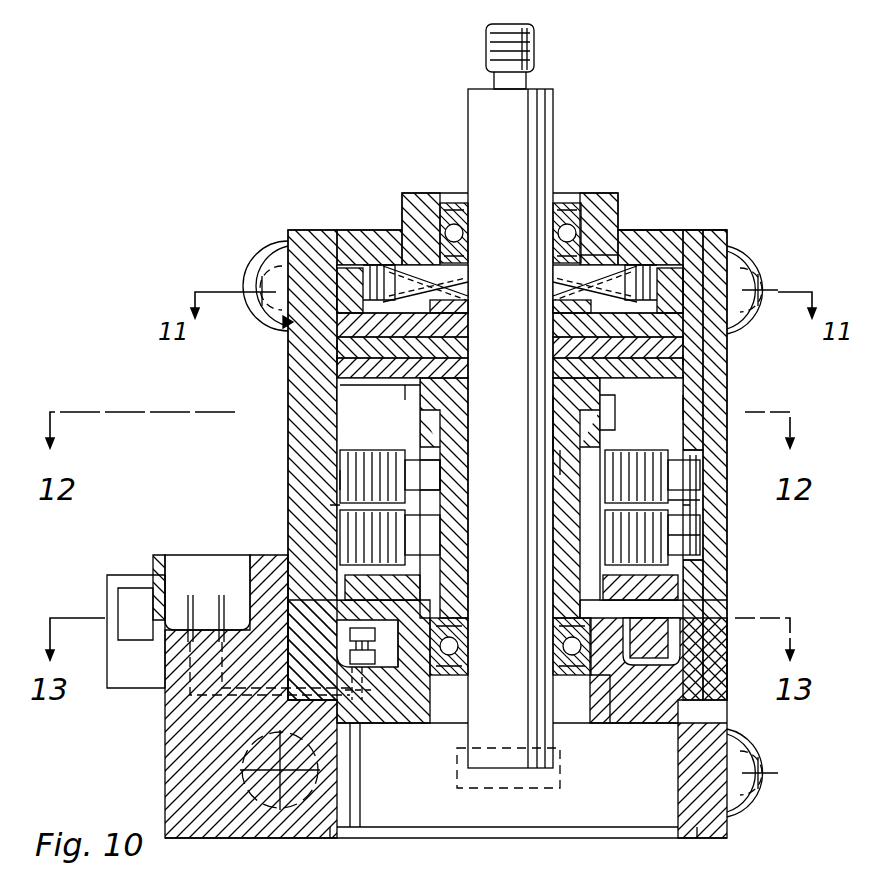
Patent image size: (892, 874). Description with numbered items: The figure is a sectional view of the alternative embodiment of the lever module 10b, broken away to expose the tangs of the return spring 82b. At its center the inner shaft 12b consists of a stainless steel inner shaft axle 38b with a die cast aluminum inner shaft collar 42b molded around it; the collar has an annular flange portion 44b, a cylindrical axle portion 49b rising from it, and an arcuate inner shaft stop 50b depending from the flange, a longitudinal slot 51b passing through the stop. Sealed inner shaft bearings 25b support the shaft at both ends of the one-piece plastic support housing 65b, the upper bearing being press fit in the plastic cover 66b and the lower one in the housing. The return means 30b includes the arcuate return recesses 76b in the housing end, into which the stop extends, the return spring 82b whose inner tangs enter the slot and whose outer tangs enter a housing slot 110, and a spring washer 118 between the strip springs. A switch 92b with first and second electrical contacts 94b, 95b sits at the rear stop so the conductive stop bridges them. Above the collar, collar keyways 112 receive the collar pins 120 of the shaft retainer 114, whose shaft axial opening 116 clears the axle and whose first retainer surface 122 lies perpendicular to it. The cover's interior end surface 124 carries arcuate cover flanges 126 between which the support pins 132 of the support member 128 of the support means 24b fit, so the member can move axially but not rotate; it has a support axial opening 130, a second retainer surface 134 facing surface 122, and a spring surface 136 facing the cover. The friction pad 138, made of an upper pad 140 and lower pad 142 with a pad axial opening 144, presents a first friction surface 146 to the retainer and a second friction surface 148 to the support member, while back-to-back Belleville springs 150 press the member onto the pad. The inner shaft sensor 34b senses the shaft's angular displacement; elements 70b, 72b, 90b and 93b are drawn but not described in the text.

The lever module 10b is at (263, 186).
The inner shaft 12b is at (556, 119).
The support means 24b is at (343, 215).
The inner shaft bearings 25b is at (568, 205).
The return means 30b is at (635, 455).
The inner shaft sensor 34b is at (500, 788).
The inner shaft axle 38b is at (468, 130).
The inner shaft collar 42b is at (463, 504).
The annular flange portion 44b is at (735, 605).
The cylindrical axle portion 49b is at (560, 462).
The inner shaft stop 50b is at (655, 665).
The longitudinal slot 51b is at (445, 487).
The support housing 65b is at (720, 500).
The cover 66b is at (668, 235).
The stator plate 70b is at (396, 657).
The base leg 72b is at (352, 700).
The return recesses 76b is at (603, 692).
The return spring 82b is at (672, 542).
The connector housing 90b is at (157, 572).
The switch 92b is at (398, 652).
The wires 93b is at (220, 560).
The first electrical contact 94b is at (345, 636).
The second electrical contact 95b is at (380, 700).
The housing slot 110 is at (330, 517).
The collar keyways 112 is at (563, 423).
The shaft retainer 114 is at (345, 396).
The shaft axial opening 116 is at (468, 372).
The spring washer 118 is at (340, 478).
The collar pins 120 is at (600, 412).
The first retainer surface 122 is at (700, 400).
The interior end surface 124 is at (605, 262).
The cover flanges 126 is at (683, 275).
The support member 128 is at (290, 322).
The support axial opening 130 is at (468, 325).
The support pins 132 is at (268, 262).
The second retainer surface 134 is at (700, 360).
The spring surface 136 is at (700, 340).
The friction pad 138 is at (705, 380).
The upper pad 140 is at (337, 345).
The lower pad 142 is at (337, 360).
The pad axial opening 144 is at (468, 348).
The first friction surface 146 is at (410, 385).
The second friction surface 148 is at (365, 390).
The Belleville springs 150 is at (455, 290).